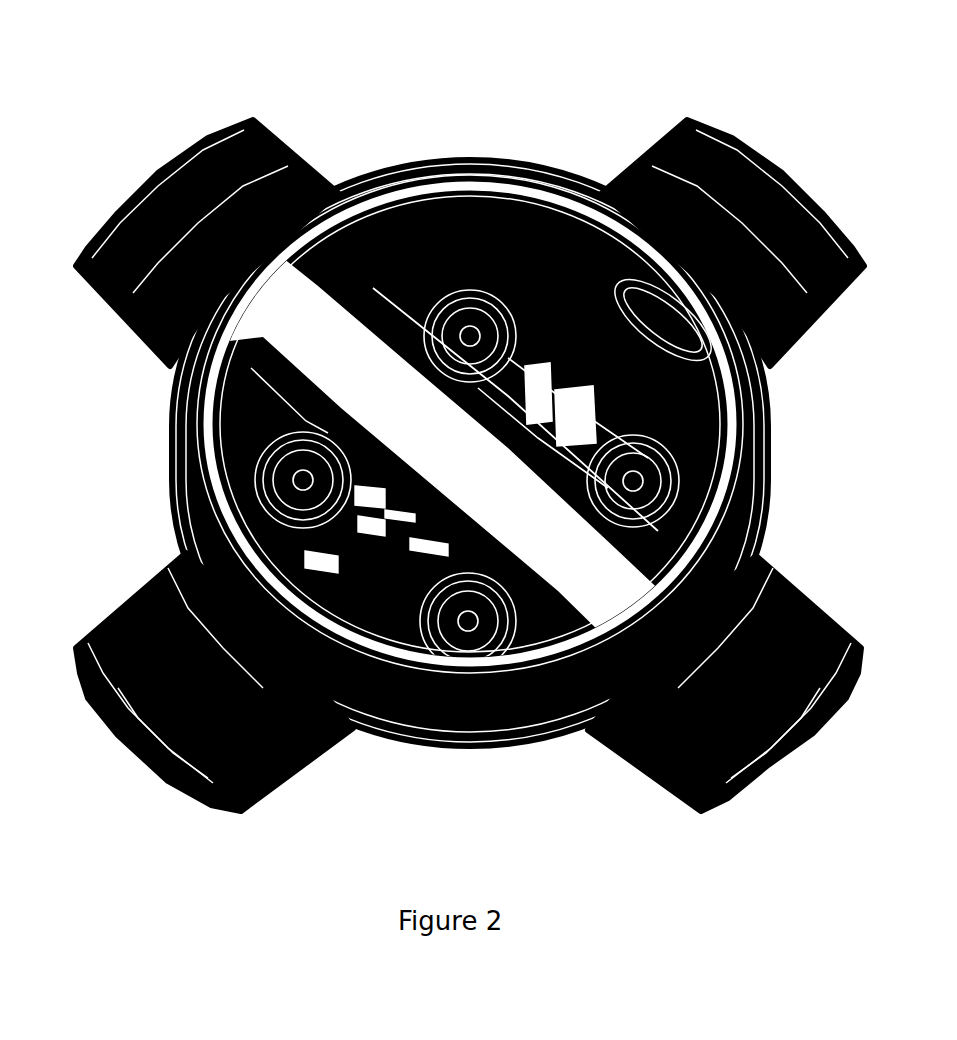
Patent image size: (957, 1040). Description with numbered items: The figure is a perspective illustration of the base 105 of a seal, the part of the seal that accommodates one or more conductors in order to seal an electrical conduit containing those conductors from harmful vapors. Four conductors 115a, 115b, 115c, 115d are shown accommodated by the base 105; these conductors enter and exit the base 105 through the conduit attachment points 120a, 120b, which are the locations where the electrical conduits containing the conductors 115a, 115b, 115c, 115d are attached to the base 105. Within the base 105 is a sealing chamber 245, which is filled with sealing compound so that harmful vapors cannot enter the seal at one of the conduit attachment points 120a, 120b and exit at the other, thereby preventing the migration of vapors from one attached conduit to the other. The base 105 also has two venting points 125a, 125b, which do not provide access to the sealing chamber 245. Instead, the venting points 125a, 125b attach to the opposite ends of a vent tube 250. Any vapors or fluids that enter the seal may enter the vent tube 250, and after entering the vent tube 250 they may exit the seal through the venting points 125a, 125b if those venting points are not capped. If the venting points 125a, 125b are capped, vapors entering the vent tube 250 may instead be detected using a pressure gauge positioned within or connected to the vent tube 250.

The base 105 is at (491, 36).
The venting point 125a is at (128, 182).
The conduit attachment point 120a is at (785, 176).
The conduit attachment point 120b is at (163, 727).
The venting point 125b is at (762, 737).
The sealing chamber 245 is at (686, 403).
The vent tube 250 is at (337, 352).
The conductor 115a is at (288, 530).
The conductor 115b is at (345, 548).
The conductor 115c is at (395, 540).
The conductor 115d is at (455, 640).